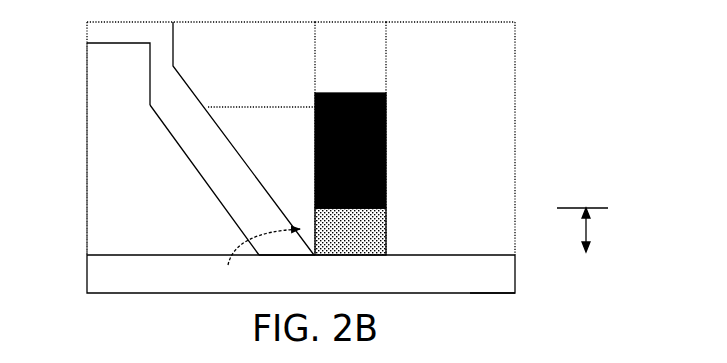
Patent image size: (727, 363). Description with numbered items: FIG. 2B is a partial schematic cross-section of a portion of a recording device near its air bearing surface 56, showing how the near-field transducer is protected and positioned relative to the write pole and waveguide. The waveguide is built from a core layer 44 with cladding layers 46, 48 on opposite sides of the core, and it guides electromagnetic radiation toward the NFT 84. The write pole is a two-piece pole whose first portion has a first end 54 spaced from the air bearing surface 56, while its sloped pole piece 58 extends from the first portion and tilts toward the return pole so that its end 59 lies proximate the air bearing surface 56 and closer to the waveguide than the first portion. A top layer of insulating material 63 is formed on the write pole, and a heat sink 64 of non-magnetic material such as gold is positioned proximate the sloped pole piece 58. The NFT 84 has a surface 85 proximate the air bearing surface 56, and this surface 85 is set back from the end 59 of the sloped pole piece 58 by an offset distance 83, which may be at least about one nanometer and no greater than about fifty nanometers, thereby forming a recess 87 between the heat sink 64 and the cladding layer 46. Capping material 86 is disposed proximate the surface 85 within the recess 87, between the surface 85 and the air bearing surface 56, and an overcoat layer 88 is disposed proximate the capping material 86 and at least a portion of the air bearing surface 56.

The core layer 44 is at (350, 21).
The cladding layer 46 is at (457, 21).
The cladding layer 48 is at (237, 21).
The first end 54 is at (116, 44).
The air bearing surface 56 is at (480, 302).
The sloped pole piece 58 is at (188, 158).
The end 59 is at (280, 258).
The top layer of insulating material 63 is at (87, 118).
The heat sink 64 is at (252, 106).
The offset distance 83 is at (588, 228).
The NFT 84 is at (388, 116).
The surface 85 is at (373, 208).
The capping material 86 is at (387, 230).
The recess 87 is at (259, 257).
The overcoat layer 88 is at (87, 278).